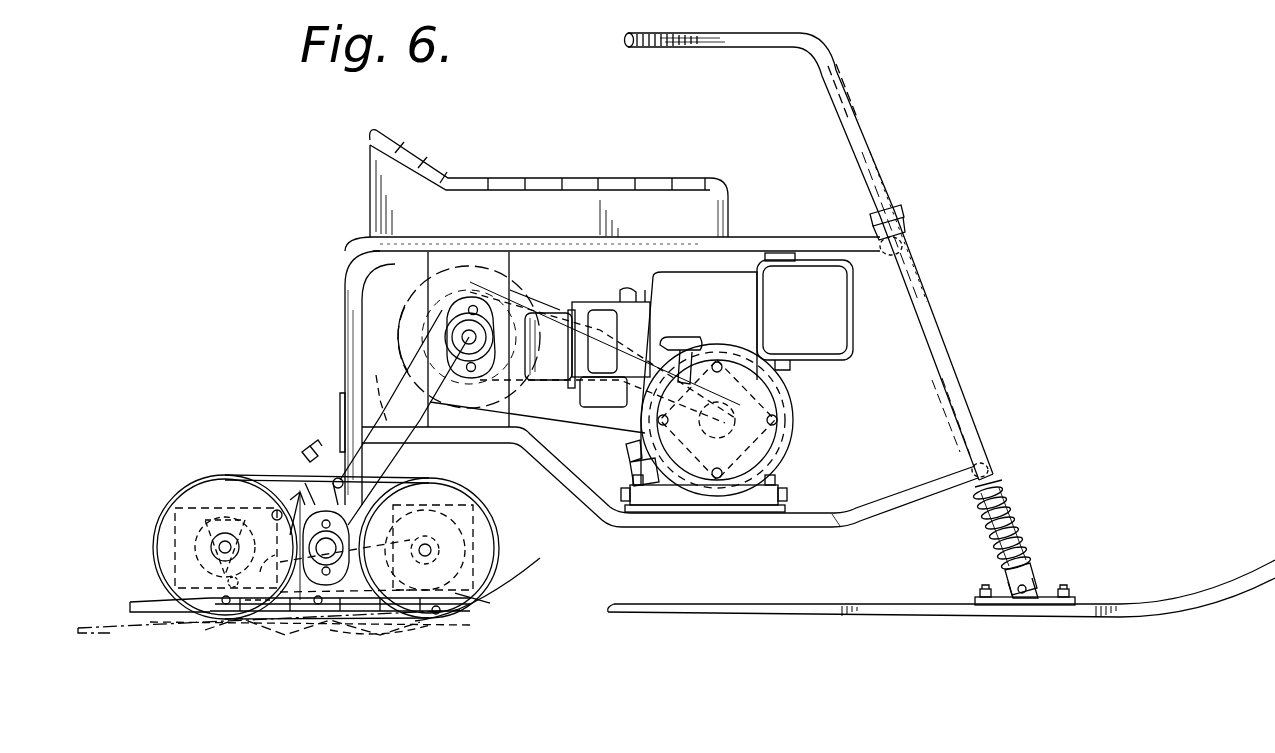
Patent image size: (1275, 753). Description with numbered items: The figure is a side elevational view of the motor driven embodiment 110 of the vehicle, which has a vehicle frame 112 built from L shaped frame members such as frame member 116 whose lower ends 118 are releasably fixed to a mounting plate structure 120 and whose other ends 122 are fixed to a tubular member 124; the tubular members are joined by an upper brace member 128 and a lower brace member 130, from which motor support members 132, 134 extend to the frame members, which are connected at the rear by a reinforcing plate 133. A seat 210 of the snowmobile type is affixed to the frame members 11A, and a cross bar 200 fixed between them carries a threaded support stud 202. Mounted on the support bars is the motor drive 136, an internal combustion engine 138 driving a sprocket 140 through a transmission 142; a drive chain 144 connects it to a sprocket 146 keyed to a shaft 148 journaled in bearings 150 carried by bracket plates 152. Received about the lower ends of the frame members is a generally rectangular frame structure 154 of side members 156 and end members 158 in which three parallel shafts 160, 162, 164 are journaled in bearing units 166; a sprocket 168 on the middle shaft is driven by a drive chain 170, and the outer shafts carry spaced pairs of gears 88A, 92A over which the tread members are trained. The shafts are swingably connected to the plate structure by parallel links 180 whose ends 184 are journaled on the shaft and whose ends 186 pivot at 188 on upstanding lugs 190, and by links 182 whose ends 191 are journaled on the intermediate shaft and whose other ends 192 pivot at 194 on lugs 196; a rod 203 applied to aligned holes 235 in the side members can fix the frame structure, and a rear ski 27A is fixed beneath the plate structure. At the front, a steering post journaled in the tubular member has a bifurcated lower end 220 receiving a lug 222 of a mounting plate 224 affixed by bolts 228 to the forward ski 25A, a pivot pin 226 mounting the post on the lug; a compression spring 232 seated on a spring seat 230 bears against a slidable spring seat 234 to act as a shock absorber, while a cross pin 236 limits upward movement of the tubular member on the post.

The motor driven embodiment 110 is at (1050, 208).
The vehicle frame 112 is at (921, 238).
The L shaped frame member 116 is at (743, 249).
The lower ends 118 is at (428, 514).
The mounting plate structure 120 is at (400, 624).
The other ends 122 is at (830, 250).
The tubular member 124 is at (942, 333).
The upper brace member 128 is at (910, 247).
The lower brace member 130 is at (993, 455).
The motor support member 132 is at (920, 508).
The reinforcing plate 133 is at (342, 396).
The motor support member 134 is at (848, 524).
The motor drive 136 is at (910, 393).
The internal combustion engine 138 is at (690, 294).
The sprocket 140 is at (725, 430).
The transmission 142 is at (775, 400).
The drive chain 144 is at (538, 305).
The sprocket 146 is at (520, 252).
The shaft 148 is at (462, 338).
The bearings 150 is at (466, 330).
The bracket plates 152 is at (470, 252).
The frame structure 154 is at (299, 486).
The side members 156 is at (336, 478).
The end members 158 is at (150, 515).
The shaft 160 is at (210, 548).
The shaft 162 is at (292, 622).
The shaft 164 is at (494, 530).
The bearing units 166 is at (170, 580).
The sprocket 168 is at (402, 463).
The drive chain 170 is at (386, 385).
The parallel links 180 is at (224, 478).
The parallel links 182 is at (358, 632).
The ends 184 is at (150, 626).
The ends 186 is at (225, 629).
The pivot 188 is at (205, 625).
The upstanding lugs 190 is at (304, 534).
The ends 191 is at (336, 623).
The other ends 192 is at (440, 612).
The pivot 194 is at (480, 593).
The upstanding lugs 196 is at (426, 622).
The cross bar 200 is at (540, 403).
The support stud 202 is at (324, 424).
The rod 203 is at (276, 494).
The seat 210 is at (650, 182).
The bifurcated lower end 220 is at (1008, 600).
The lug 222 is at (1012, 598).
The mounting plate 224 is at (1045, 608).
The pivot pin 226 is at (1036, 585).
The bolts 228 is at (978, 592).
The spring seat 230 is at (1027, 570).
The compression spring 232 is at (1014, 540).
The spring seat 234 is at (997, 486).
The aligned holes 235 is at (446, 462).
The cross pin 236 is at (900, 214).
The frame upright 11A is at (344, 287).
The forward runner or ski 25A is at (1155, 618).
The rear ski or runner 27A is at (533, 568).
The gears 88A is at (495, 514).
The gears 92A is at (207, 476).